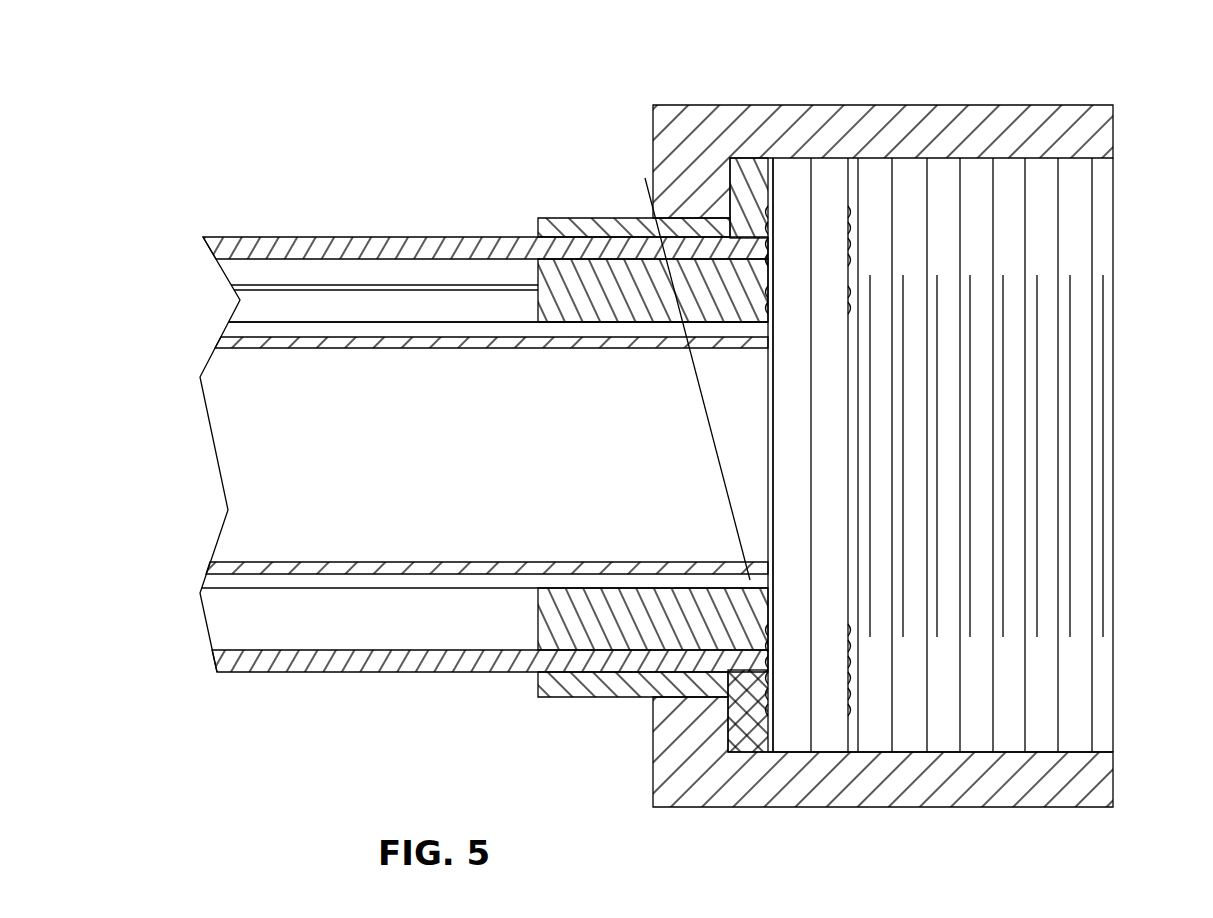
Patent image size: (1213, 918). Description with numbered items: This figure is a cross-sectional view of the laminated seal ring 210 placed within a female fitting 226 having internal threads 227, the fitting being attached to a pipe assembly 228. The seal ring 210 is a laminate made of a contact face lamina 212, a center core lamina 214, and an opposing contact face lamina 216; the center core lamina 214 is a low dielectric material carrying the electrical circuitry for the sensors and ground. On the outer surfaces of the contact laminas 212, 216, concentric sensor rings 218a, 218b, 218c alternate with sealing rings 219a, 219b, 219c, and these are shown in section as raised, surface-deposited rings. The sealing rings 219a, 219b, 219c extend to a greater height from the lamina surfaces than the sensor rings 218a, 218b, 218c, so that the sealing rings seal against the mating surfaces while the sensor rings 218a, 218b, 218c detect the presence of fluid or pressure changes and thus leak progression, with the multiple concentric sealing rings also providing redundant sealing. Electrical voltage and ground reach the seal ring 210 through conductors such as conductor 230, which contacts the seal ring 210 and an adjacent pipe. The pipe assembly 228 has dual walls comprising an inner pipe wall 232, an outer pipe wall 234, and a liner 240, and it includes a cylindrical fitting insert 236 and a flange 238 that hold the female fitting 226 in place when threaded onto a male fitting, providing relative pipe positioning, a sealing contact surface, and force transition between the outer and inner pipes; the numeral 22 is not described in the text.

The sensor element 22 is at (772, 333).
The seal ring 210 is at (920, 483).
The contact face lamina 212 is at (773, 740).
The center core lamina 214 is at (812, 737).
The opposing contact face lamina 216 is at (850, 737).
The sensor ring 218a is at (652, 758).
The sensor ring 218b is at (768, 648).
The sensor ring 218c is at (768, 712).
The sealing ring 219a is at (768, 307).
The sealing ring 219b is at (768, 253).
The sealing ring 219c is at (771, 213).
The female fitting 226 is at (1063, 122).
The internal threads 227 is at (1090, 752).
The pipe assembly 228 is at (406, 200).
The conductor 230 is at (502, 285).
The inner pipe wall 232 is at (325, 585).
The outer pipe wall 234 is at (352, 248).
The cylindrical fitting insert 236 is at (583, 632).
The flange 238 is at (573, 225).
The liner 240 is at (423, 570).